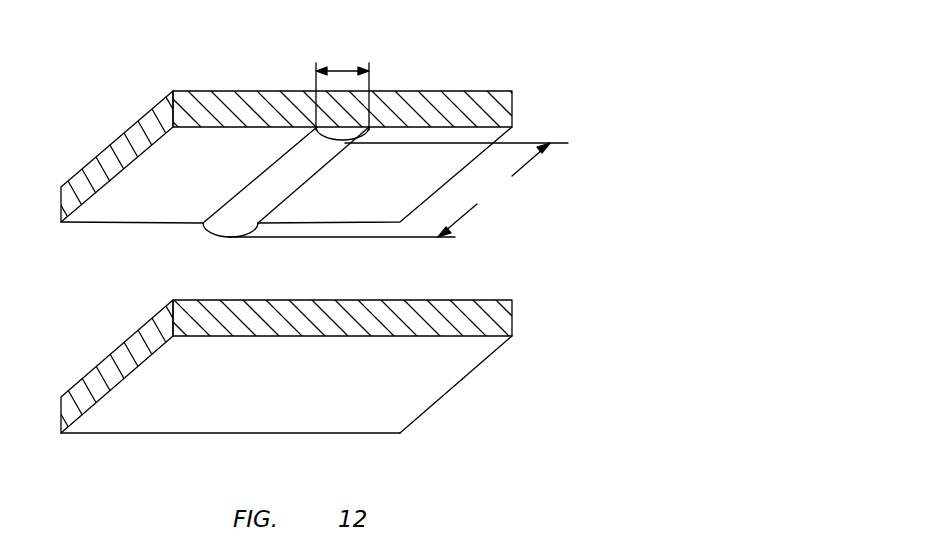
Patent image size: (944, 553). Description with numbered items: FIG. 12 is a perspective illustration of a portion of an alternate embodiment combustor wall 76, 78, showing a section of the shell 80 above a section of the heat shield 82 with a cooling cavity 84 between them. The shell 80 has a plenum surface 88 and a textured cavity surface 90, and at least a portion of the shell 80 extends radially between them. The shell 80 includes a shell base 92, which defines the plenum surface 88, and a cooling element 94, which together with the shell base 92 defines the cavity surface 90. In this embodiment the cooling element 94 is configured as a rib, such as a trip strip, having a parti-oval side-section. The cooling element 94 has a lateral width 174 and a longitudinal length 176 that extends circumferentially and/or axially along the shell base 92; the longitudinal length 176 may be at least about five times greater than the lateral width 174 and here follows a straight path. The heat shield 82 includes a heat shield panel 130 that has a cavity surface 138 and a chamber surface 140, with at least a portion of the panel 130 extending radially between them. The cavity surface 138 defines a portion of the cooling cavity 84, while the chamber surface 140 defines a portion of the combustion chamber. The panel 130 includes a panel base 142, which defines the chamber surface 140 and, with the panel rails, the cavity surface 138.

The first plate body 76 is at (331, 145).
The first plate body 78 is at (512, 62).
The shell 80 is at (528, 115).
The plenum surface 88 is at (135, 134).
The shell base 92 is at (105, 147).
The cavity surface 90 is at (104, 192).
The cooling element 94 is at (225, 228).
The lateral width 174 is at (342, 68).
The longitudinal length 176 is at (398, 190).
The cooling cavity 84 is at (90, 310).
The heat shield 82 is at (385, 299).
The heat shield panel 130 is at (528, 317).
The cavity surface 138 is at (117, 347).
The chamber surface 140 is at (113, 390).
The panel base 142 is at (430, 385).